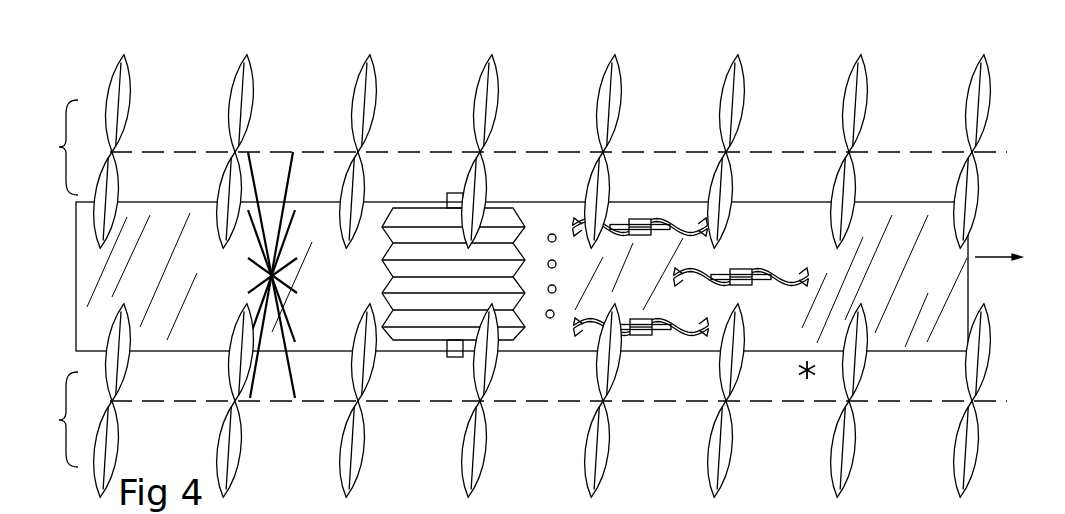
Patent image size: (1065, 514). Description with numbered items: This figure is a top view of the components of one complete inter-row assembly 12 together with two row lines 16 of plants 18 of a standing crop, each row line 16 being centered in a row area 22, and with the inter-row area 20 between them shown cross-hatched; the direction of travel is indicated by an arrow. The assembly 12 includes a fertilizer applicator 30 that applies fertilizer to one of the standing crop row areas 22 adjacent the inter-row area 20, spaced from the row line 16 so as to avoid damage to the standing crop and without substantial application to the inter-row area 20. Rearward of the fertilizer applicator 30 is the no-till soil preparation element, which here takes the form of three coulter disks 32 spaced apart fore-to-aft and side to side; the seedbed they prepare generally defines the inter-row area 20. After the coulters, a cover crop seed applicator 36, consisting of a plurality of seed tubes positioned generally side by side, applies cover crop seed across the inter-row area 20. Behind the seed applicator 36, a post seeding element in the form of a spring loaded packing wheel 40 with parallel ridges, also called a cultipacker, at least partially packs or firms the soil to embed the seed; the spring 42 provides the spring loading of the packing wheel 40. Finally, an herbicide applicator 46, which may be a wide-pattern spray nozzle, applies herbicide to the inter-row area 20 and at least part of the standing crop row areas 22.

The inter-row assembly 12 is at (655, 106).
The row line 16 is at (418, 147).
The plants 18 is at (378, 96).
The inter-row area 20 is at (88, 272).
The row area 22 is at (45, 283).
The fertilizer applicator 30 is at (803, 380).
The coulter disks 32 is at (663, 210).
The cover crop seed applicator 36 is at (545, 329).
The packing wheel 40 is at (422, 317).
The spring 42 is at (312, 363).
The herbicide applicator 46 is at (263, 273).